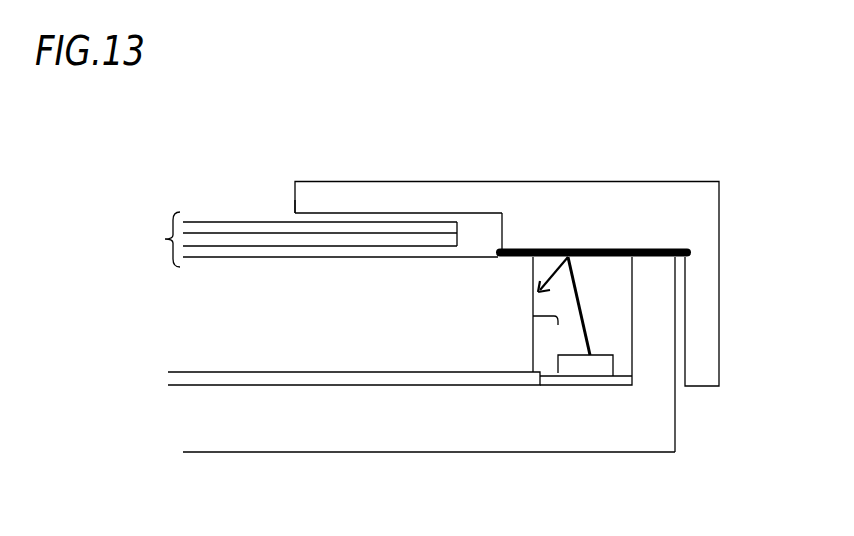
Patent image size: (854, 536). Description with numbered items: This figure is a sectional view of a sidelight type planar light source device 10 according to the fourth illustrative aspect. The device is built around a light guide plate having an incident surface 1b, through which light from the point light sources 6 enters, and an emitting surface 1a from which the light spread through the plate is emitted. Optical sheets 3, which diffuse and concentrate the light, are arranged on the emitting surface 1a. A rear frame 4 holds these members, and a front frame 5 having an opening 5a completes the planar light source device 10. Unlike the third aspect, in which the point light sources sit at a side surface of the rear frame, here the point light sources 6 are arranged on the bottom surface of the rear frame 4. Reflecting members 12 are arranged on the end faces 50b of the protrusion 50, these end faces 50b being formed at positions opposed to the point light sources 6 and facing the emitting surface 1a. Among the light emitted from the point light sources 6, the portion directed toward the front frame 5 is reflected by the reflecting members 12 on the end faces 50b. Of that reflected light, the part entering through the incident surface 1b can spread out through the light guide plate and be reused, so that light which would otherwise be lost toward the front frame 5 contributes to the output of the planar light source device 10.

The planar light source device 10 is at (708, 440).
The emitting surface 1a is at (295, 257).
The incident surface 1b is at (558, 325).
The optical sheets 3 is at (294, 239).
The rear frame 4 is at (332, 430).
The front frame 5 is at (705, 300).
The opening 5a is at (266, 187).
The point light sources 6 is at (587, 380).
The reflecting members 12 is at (545, 248).
The protrusion 50 is at (628, 200).
The end faces 50b is at (527, 248).